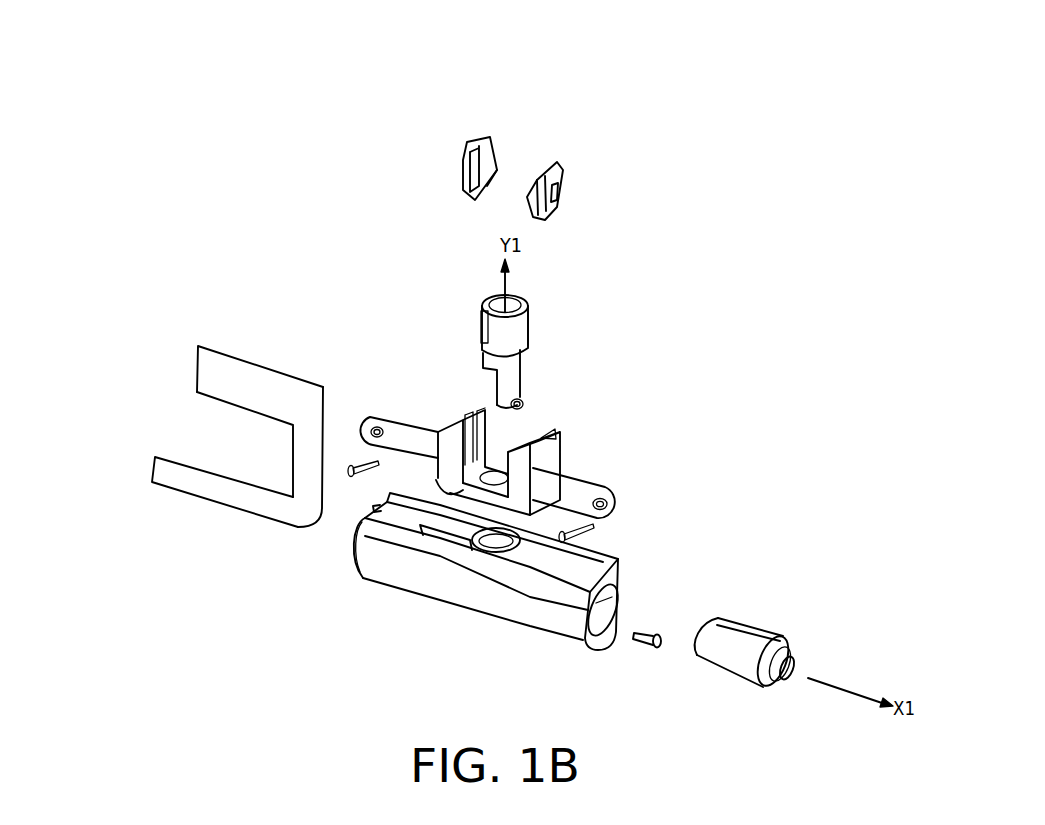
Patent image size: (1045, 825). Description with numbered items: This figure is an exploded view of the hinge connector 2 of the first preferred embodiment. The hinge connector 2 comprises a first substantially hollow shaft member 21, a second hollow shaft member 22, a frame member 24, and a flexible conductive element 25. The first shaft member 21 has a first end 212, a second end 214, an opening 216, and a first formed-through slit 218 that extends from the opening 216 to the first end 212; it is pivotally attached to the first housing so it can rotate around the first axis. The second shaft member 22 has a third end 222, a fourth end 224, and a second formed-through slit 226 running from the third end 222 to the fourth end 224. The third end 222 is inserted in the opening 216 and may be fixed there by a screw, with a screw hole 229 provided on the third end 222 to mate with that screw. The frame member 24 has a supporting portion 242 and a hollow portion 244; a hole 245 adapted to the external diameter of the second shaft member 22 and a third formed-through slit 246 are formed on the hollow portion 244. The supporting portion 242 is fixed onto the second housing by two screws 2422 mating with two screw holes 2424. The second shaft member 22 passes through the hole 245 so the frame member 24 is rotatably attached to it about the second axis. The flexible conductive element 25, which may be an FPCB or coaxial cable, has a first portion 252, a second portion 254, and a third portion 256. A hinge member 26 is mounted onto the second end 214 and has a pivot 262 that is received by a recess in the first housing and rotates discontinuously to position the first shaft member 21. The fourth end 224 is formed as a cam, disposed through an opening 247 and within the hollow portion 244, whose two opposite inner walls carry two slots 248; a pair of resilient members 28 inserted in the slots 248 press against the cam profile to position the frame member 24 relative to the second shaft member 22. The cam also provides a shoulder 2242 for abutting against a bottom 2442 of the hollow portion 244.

The hinge connector 2 is at (567, 77).
The first substantially hollow shaft member 21 is at (431, 605).
The first end 212 is at (358, 562).
The second end 214 is at (573, 632).
The opening 216 is at (476, 546).
The first formed-through slit 218 is at (428, 525).
The second hollow shaft member 22 is at (459, 303).
The third end 222 is at (497, 395).
The fourth end 224 is at (480, 335).
The second formed-through slit 226 is at (482, 305).
The screw hole 229 is at (497, 407).
The shoulder 2242 is at (528, 348).
The frame member 24 is at (506, 430).
The supporting portion 242 is at (405, 438).
The screws 2422 is at (361, 465).
The screw holes 2424 is at (378, 427).
The hollow portion 244 is at (556, 442).
The bottom 2442 is at (446, 494).
The hole 245 is at (494, 472).
The third formed-through slit 246 is at (533, 401).
The opening 247 is at (557, 433).
The slots 248 is at (458, 418).
The flexible conductive element 25 is at (187, 433).
The first portion 252 is at (165, 472).
The second portion 254 is at (303, 463).
The third portion 256 is at (206, 373).
The hinge member 26 is at (759, 623).
The pivot 262 is at (782, 650).
The resilient members 28 is at (558, 168).